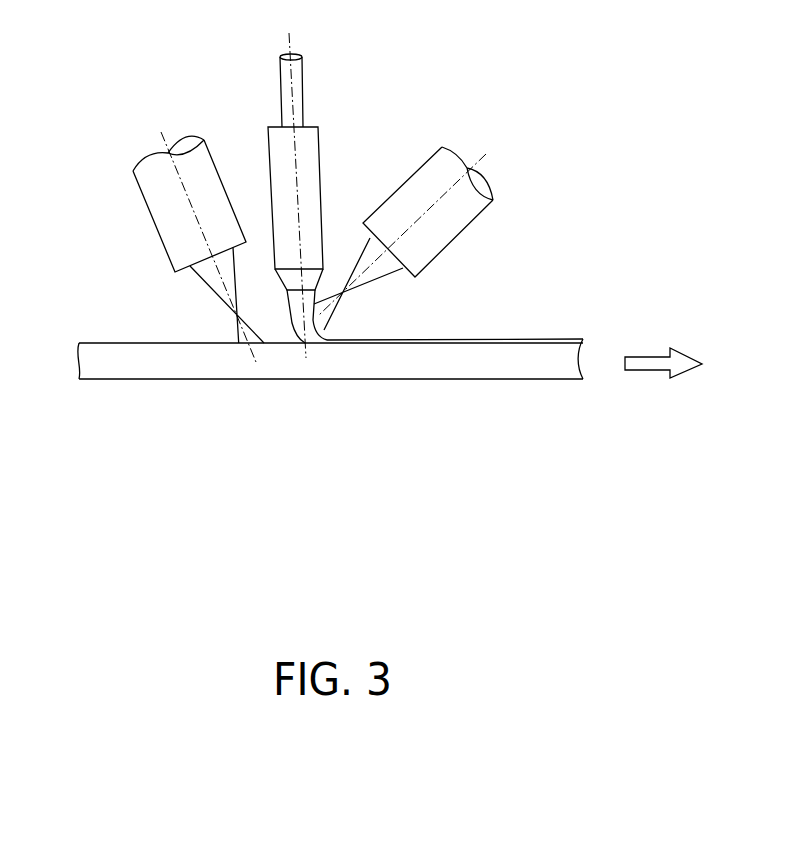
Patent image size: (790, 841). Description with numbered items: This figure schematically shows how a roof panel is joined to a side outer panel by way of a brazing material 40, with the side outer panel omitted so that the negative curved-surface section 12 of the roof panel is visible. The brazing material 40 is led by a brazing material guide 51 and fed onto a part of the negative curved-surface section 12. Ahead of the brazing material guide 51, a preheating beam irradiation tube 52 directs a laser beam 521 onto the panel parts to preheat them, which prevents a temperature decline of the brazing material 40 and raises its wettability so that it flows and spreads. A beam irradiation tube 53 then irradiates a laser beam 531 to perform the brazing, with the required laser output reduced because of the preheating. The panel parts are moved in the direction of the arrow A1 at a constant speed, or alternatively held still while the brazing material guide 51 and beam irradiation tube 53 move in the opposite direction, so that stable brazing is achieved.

The negative curved-surface section 12 is at (377, 366).
The brazing material 40 is at (297, 332).
The brazing material guide 51 is at (269, 148).
The preheating beam irradiation tube 52 is at (140, 193).
The laser beam 521 is at (205, 287).
The beam irradiation tube 53 is at (477, 227).
The laser beam 531 is at (383, 280).
The arrow A1 is at (648, 356).